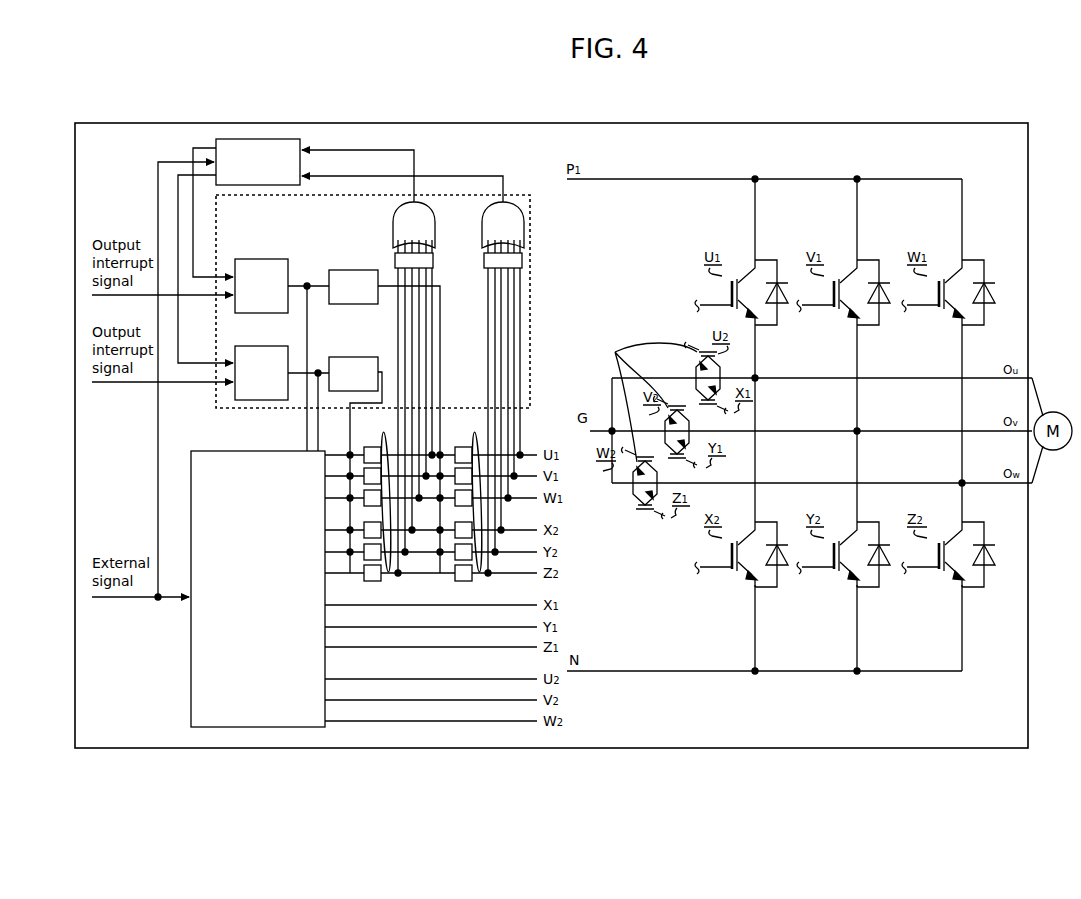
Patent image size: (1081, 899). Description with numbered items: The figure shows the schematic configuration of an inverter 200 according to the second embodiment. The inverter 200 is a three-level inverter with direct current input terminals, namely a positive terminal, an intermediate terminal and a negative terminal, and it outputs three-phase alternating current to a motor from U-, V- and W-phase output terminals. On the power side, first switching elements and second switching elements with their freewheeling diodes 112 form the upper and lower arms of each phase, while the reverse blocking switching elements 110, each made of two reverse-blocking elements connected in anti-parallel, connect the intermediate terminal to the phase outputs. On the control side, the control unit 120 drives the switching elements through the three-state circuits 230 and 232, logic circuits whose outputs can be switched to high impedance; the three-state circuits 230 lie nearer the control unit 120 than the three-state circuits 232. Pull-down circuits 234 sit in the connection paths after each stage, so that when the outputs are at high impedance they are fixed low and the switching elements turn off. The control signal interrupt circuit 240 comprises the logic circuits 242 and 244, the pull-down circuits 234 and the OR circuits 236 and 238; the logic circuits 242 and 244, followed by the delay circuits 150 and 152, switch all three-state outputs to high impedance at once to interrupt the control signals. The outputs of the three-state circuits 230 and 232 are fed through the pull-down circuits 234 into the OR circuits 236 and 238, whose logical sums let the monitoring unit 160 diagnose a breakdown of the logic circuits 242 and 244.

The inverter 200 is at (1027, 121).
The reverse blocking switching elements 110 is at (662, 425).
The freewheeling diodes 112 is at (775, 314).
The control unit 120 is at (225, 446).
The delay circuit 150 is at (338, 270).
The delay circuit 152 is at (338, 357).
The monitoring unit 160 is at (292, 139).
The three-state circuits 230 is at (386, 436).
The three-state circuits 232 is at (476, 436).
The pull-down circuits 234 is at (394, 256).
The OR circuits 236 is at (392, 230).
The OR circuits 238 is at (481, 230).
The control signal interrupt circuit 240 is at (530, 195).
The logic circuit 242 is at (254, 261).
The logic circuit 244 is at (254, 348).